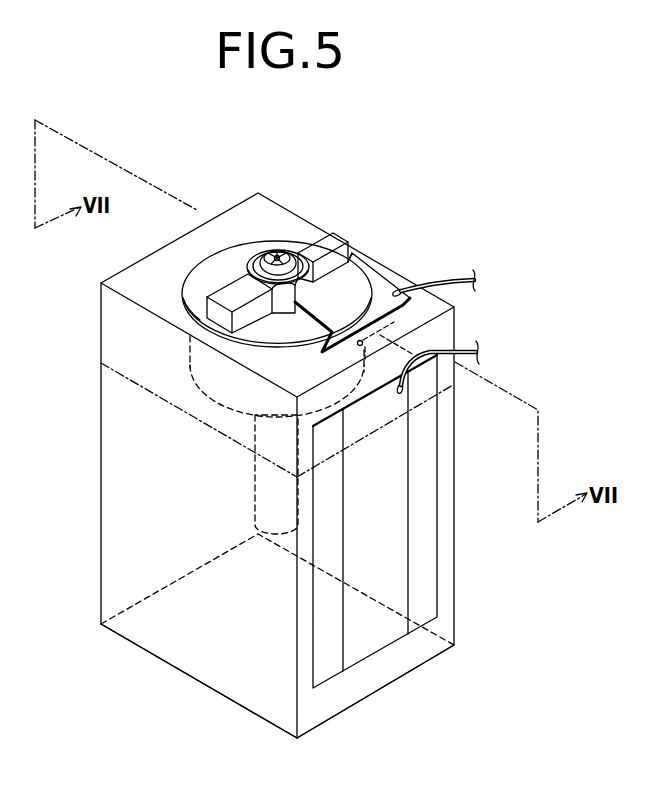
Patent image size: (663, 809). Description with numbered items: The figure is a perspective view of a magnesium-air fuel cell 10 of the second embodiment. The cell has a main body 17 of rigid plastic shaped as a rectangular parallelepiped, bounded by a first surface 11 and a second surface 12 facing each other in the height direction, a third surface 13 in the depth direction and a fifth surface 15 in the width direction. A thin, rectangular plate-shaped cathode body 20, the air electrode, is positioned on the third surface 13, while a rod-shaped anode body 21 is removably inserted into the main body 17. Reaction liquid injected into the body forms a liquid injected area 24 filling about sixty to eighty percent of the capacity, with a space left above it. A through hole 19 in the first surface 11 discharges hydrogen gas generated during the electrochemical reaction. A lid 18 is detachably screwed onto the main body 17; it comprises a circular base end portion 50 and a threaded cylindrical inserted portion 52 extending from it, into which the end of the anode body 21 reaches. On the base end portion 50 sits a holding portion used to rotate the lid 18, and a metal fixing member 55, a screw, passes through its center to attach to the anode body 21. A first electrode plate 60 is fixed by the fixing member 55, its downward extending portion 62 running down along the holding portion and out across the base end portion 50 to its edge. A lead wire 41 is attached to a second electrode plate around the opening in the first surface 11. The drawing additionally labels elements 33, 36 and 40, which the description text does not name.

The magnesium-air fuel cell 10 is at (418, 194).
The first surface 11 is at (243, 217).
The second surface 12 is at (218, 653).
The third surface 13 is at (438, 623).
The fifth surface 15 is at (262, 688).
The main body 17 is at (126, 532).
The lid 18 is at (227, 261).
The through hole 19 is at (362, 348).
The cathode body 20 is at (387, 543).
The anode body 21 is at (273, 483).
The liquid injected area 24 is at (135, 432).
The boss 33 is at (258, 256).
The terminal plate 36 is at (357, 305).
The lead wire 40 is at (472, 349).
The lead wire 41 is at (457, 280).
The base end portion 50 is at (207, 277).
The inserted portion 52 is at (207, 357).
The fixing member 55 is at (280, 248).
The first electrode plate 60 is at (322, 313).
The downward extending portion 62 is at (341, 312).